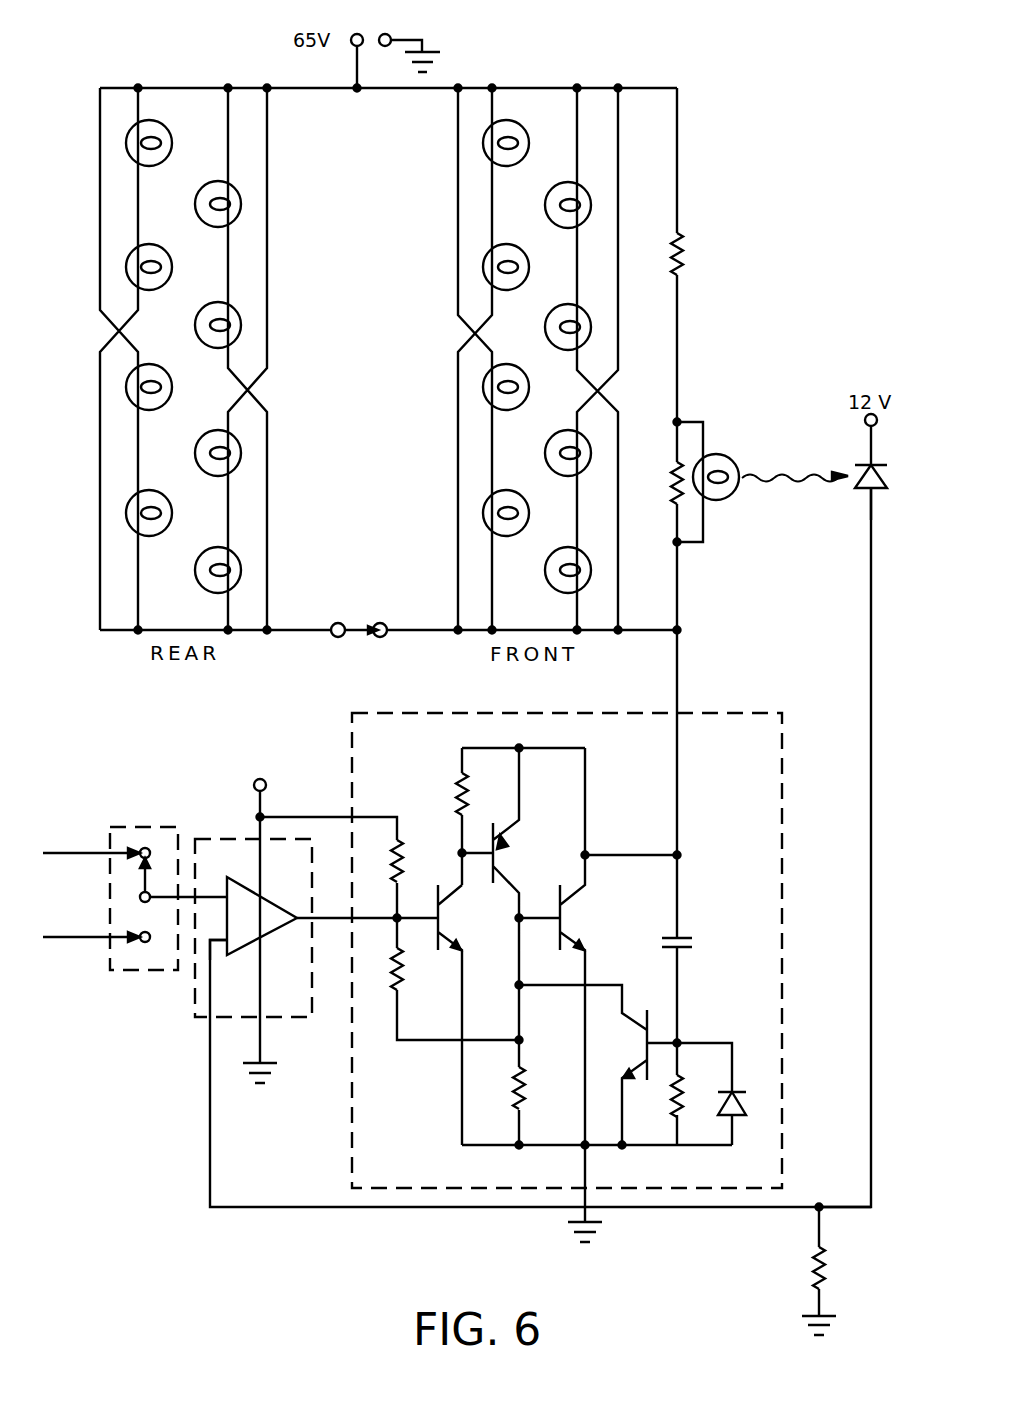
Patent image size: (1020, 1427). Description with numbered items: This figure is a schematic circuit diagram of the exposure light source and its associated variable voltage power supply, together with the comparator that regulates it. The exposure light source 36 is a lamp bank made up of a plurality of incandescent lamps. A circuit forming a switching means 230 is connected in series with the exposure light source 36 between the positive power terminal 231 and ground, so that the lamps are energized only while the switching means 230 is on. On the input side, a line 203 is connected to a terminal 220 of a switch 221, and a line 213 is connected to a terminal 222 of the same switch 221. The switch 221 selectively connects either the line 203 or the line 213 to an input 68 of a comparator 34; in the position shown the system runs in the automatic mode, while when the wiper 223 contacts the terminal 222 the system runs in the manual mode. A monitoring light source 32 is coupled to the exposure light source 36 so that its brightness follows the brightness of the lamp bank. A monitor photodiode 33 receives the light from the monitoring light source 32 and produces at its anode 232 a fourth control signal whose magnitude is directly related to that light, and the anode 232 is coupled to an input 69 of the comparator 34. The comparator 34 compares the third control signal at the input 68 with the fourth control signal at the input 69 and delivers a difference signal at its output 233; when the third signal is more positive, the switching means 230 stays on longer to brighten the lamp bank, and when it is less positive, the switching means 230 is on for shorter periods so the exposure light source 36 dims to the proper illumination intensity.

The positive power terminal 231 is at (364, 34).
The exposure light source 36 is at (393, 338).
The monitoring light source 32 is at (736, 462).
The monitor photodiode 33 is at (882, 472).
The anode 232 is at (864, 490).
The switching means 230 is at (711, 730).
The terminal 220 is at (145, 844).
The switch 221 is at (163, 854).
The line 203 is at (43, 853).
The wiper 223 is at (140, 876).
The line 213 is at (46, 937).
The terminal 222 is at (141, 944).
The input 68 is at (212, 884).
The output 233 is at (296, 914).
The comparator 34 is at (258, 930).
The input 69 is at (218, 946).